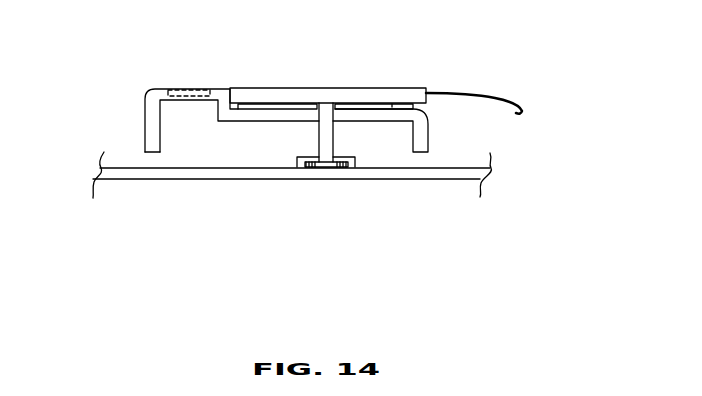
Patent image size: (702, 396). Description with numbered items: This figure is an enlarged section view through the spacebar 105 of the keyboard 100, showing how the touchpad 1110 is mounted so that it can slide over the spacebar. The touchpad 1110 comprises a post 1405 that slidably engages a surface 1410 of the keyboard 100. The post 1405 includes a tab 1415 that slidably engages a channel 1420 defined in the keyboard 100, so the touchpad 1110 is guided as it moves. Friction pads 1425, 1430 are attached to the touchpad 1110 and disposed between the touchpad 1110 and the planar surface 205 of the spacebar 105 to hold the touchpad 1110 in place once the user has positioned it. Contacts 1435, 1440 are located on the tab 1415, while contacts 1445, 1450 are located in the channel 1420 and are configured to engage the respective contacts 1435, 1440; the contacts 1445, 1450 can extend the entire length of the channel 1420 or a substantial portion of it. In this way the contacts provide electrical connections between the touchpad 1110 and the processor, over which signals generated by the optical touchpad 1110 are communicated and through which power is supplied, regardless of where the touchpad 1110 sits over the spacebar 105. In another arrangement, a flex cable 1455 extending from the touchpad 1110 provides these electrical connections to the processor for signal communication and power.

The keyboard 100 is at (153, 182).
The spacebar 105 is at (145, 128).
The planar surface 205 is at (392, 107).
The touchpad 1110 is at (253, 87).
The post 1405 is at (328, 140).
The surface 1410 is at (198, 168).
The tab 1415 is at (318, 170).
The channel 1420 is at (326, 170).
The friction pad 1425 is at (293, 106).
The friction pad 1430 is at (362, 107).
The contact 1435 is at (334, 170).
The contact 1440 is at (311, 170).
The contact 1445 is at (344, 170).
The contact 1450 is at (303, 170).
The flex cable 1455 is at (495, 92).